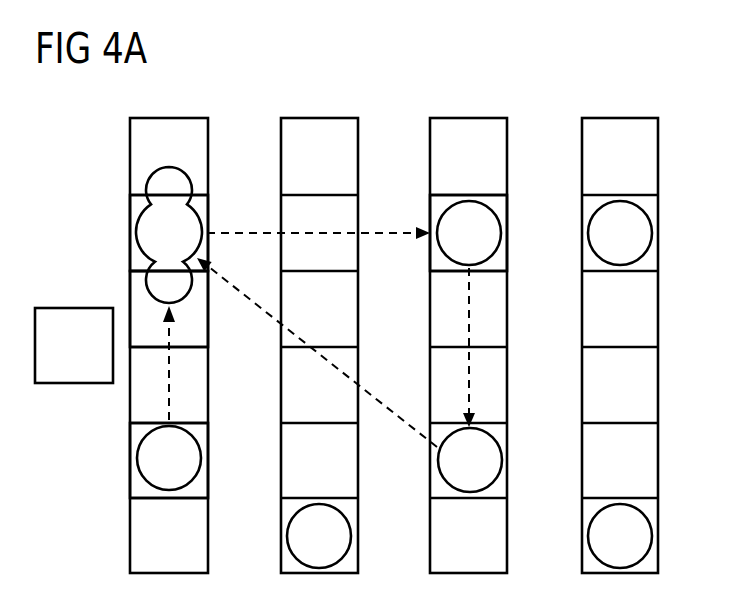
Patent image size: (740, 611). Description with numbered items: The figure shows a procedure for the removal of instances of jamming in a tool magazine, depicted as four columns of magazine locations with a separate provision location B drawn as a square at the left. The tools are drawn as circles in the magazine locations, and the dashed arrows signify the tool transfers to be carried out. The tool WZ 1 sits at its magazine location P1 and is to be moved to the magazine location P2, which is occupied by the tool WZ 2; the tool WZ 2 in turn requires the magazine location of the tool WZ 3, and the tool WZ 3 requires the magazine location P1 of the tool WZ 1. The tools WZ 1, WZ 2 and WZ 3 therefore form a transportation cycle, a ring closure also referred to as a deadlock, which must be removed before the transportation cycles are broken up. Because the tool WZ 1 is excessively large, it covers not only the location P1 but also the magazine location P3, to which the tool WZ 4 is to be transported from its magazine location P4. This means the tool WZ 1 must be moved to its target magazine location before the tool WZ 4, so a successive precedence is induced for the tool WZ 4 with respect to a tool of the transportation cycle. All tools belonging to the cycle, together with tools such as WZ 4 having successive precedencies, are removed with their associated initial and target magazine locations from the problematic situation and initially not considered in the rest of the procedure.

The provision location B is at (57, 307).
The magazine location P1 is at (130, 206).
The magazine location P2 is at (430, 206).
The magazine location P3 is at (130, 283).
The magazine location P4 is at (130, 440).
The tool WZ 1 is at (203, 220).
The tool WZ 2 is at (501, 235).
The tool WZ 3 is at (502, 460).
The tool WZ 4 is at (201, 458).